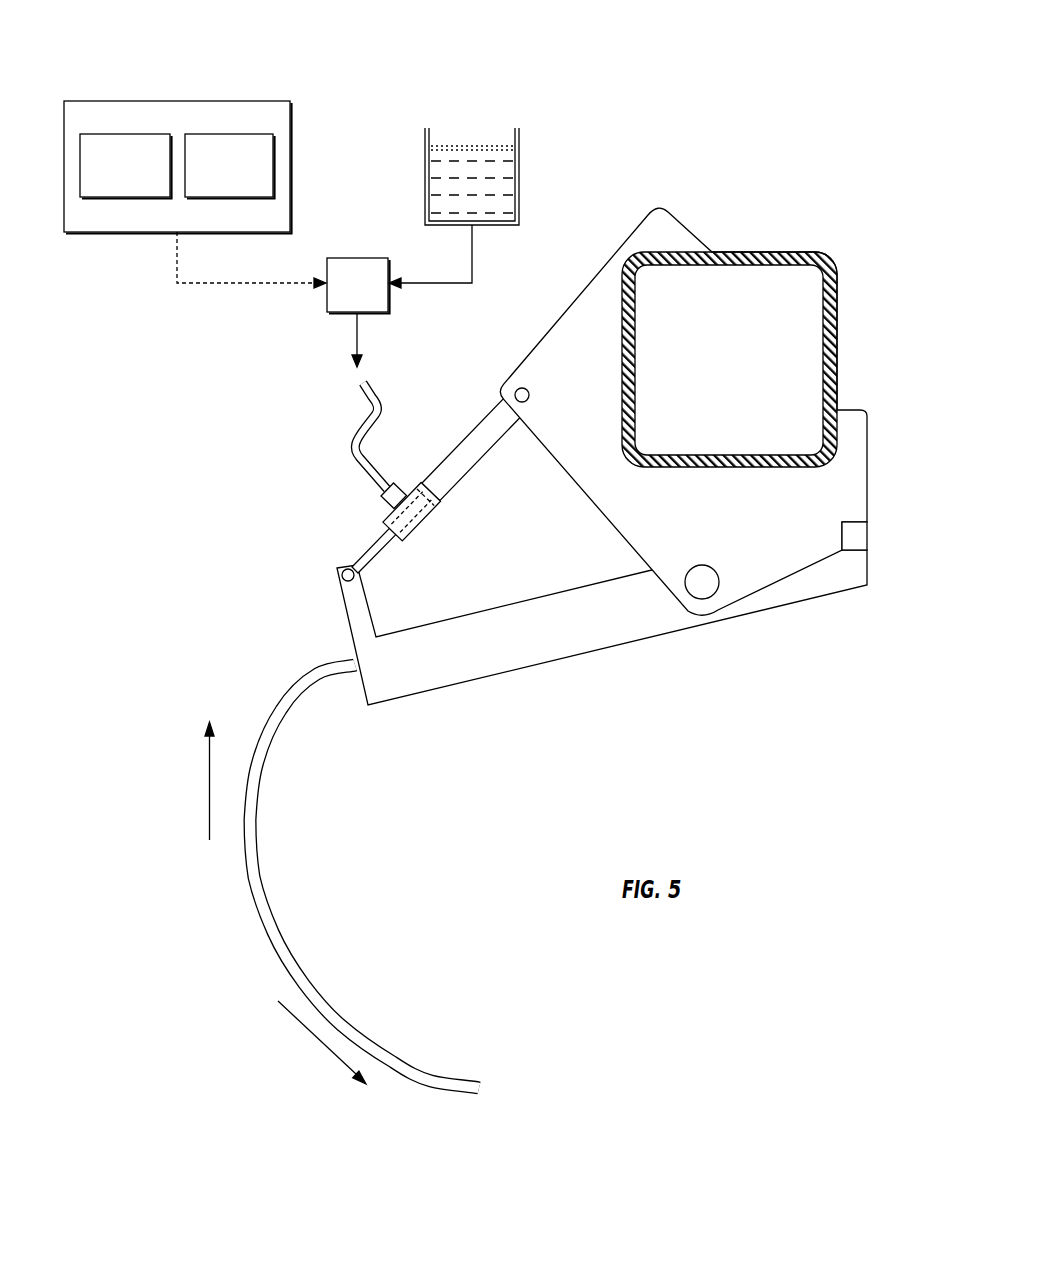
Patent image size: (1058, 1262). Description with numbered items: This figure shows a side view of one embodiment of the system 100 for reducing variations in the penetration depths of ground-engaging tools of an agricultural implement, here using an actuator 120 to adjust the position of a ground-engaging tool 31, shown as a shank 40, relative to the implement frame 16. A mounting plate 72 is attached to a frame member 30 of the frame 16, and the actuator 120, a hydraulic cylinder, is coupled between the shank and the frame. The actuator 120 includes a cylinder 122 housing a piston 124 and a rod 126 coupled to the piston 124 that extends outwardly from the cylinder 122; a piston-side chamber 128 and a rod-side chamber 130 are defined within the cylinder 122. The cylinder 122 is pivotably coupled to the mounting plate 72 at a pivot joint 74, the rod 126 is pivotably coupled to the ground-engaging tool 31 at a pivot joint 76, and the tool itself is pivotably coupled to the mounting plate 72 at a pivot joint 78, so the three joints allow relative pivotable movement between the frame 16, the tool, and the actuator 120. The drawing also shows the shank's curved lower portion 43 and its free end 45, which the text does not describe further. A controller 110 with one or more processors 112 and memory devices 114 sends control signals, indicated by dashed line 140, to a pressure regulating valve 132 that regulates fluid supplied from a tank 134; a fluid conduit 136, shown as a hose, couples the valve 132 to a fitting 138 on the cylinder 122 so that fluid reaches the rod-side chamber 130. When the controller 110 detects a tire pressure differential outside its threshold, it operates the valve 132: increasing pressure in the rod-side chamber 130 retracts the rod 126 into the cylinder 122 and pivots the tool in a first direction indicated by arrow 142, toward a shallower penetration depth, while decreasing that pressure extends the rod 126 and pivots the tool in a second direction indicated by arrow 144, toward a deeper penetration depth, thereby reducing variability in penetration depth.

The system 100 is at (244, 39).
The controller 110 is at (210, 165).
The processor 112 is at (126, 166).
The memory device 114 is at (230, 166).
The pressure regulating valve 132 is at (346, 286).
The fluid source or tank 134 is at (483, 208).
The control signals 140 is at (251, 284).
The fluid conduit 136 is at (344, 432).
The fitting 138 is at (347, 471).
The actuator 120 is at (429, 448).
The cylinder 122 is at (473, 432).
The piston 124 is at (441, 520).
The rod 126 is at (358, 533).
The piston-side chamber 128 is at (506, 485).
The rod-side chamber 130 is at (418, 538).
The mounting plate 72 is at (683, 391).
The pivot joint 74 is at (513, 342).
The pivot joint 76 is at (323, 549).
The pivot joint 78 is at (705, 627).
The frame member 30 is at (729, 324).
The frame 16 is at (867, 405).
The shank 40 is at (602, 632).
The ground-engaging tool 31 is at (447, 756).
The curved guide 43 is at (364, 876).
The guide end 45 is at (523, 1066).
The arrow (first direction) 142 is at (186, 780).
The arrow (second direction) 144 is at (311, 1048).